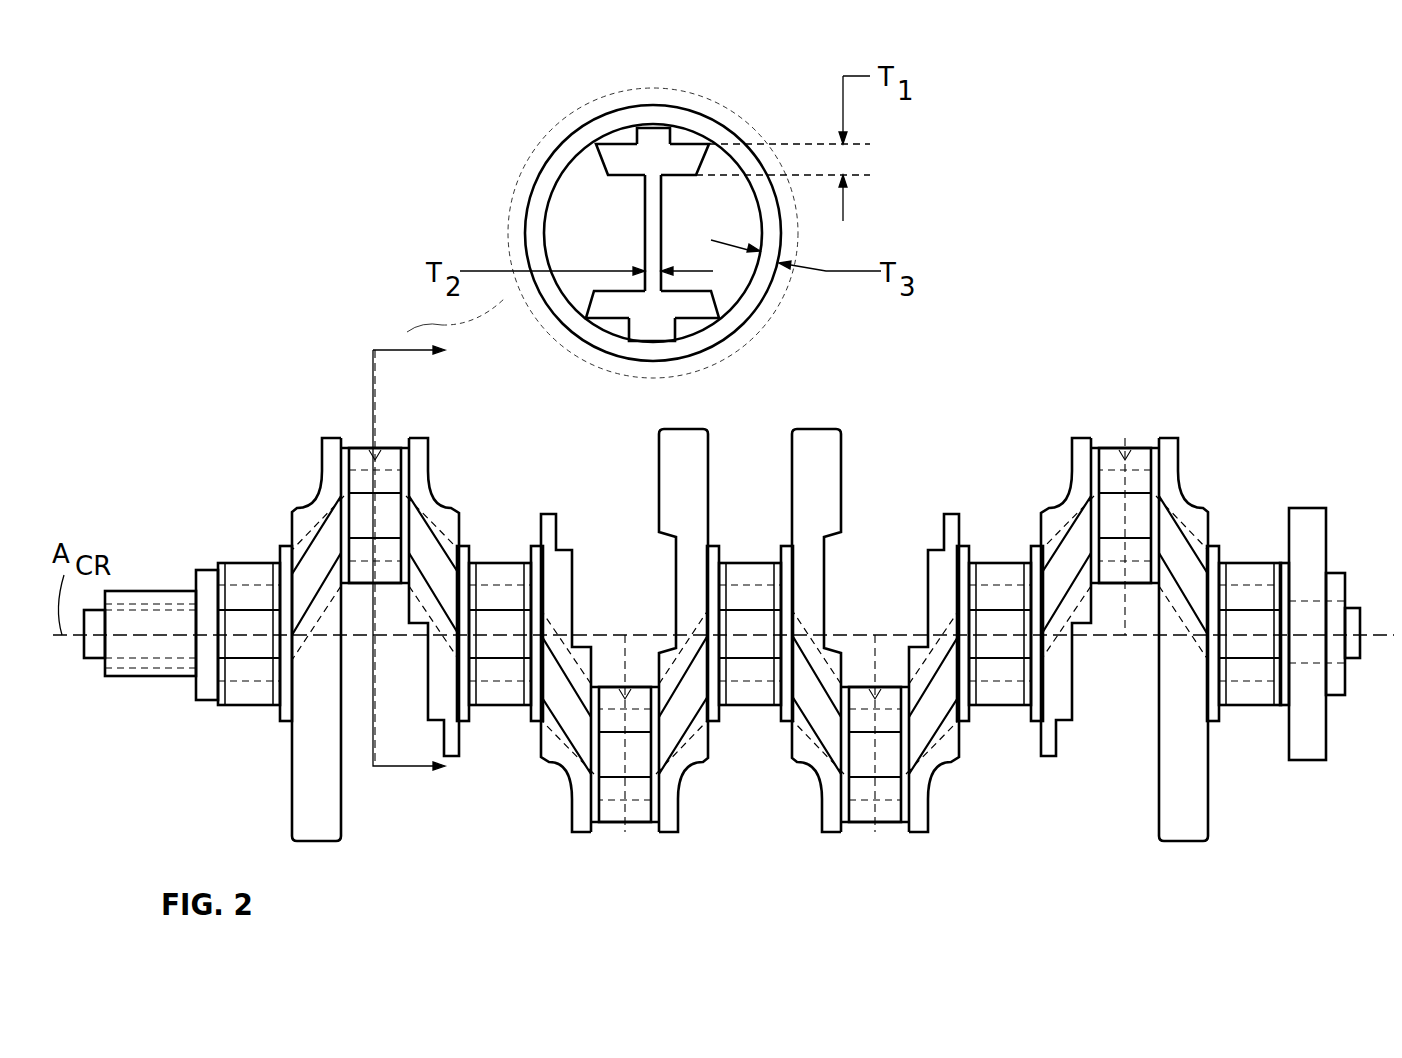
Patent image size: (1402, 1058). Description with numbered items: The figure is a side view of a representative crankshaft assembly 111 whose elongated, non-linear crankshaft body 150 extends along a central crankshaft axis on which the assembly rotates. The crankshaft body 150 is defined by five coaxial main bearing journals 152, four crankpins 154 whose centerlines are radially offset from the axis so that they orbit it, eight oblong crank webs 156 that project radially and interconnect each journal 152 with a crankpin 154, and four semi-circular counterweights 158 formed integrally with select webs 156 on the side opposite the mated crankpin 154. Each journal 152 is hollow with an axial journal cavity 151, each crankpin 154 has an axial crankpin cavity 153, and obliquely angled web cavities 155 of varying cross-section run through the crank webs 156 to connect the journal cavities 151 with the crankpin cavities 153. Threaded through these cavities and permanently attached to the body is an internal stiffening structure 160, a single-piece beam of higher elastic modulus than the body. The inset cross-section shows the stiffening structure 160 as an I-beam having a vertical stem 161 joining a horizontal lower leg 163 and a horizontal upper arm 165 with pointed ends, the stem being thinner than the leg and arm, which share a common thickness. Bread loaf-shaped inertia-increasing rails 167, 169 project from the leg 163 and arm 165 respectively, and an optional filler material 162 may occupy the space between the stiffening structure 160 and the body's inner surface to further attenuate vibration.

The crankshaft assembly 111 is at (1226, 196).
The crankshaft body 150 is at (553, 117).
The journal cavity 151 is at (230, 576).
The main bearing journal 152 is at (273, 541).
The crankpin cavity 153 is at (345, 546).
The crankpin 154 is at (360, 438).
The web cavity 155 is at (318, 493).
The crank web 156 is at (316, 431).
The counterweight 158 is at (284, 792).
The internal stiffening structure 160 is at (558, 176).
The vertical stem 161 is at (636, 219).
The filler material 162 is at (566, 199).
The horizontal lower leg 163 is at (684, 312).
The horizontal upper arm 165 is at (680, 136).
The inertia-increasing rail 167 is at (643, 333).
The inertia-increasing rail 169 is at (636, 120).